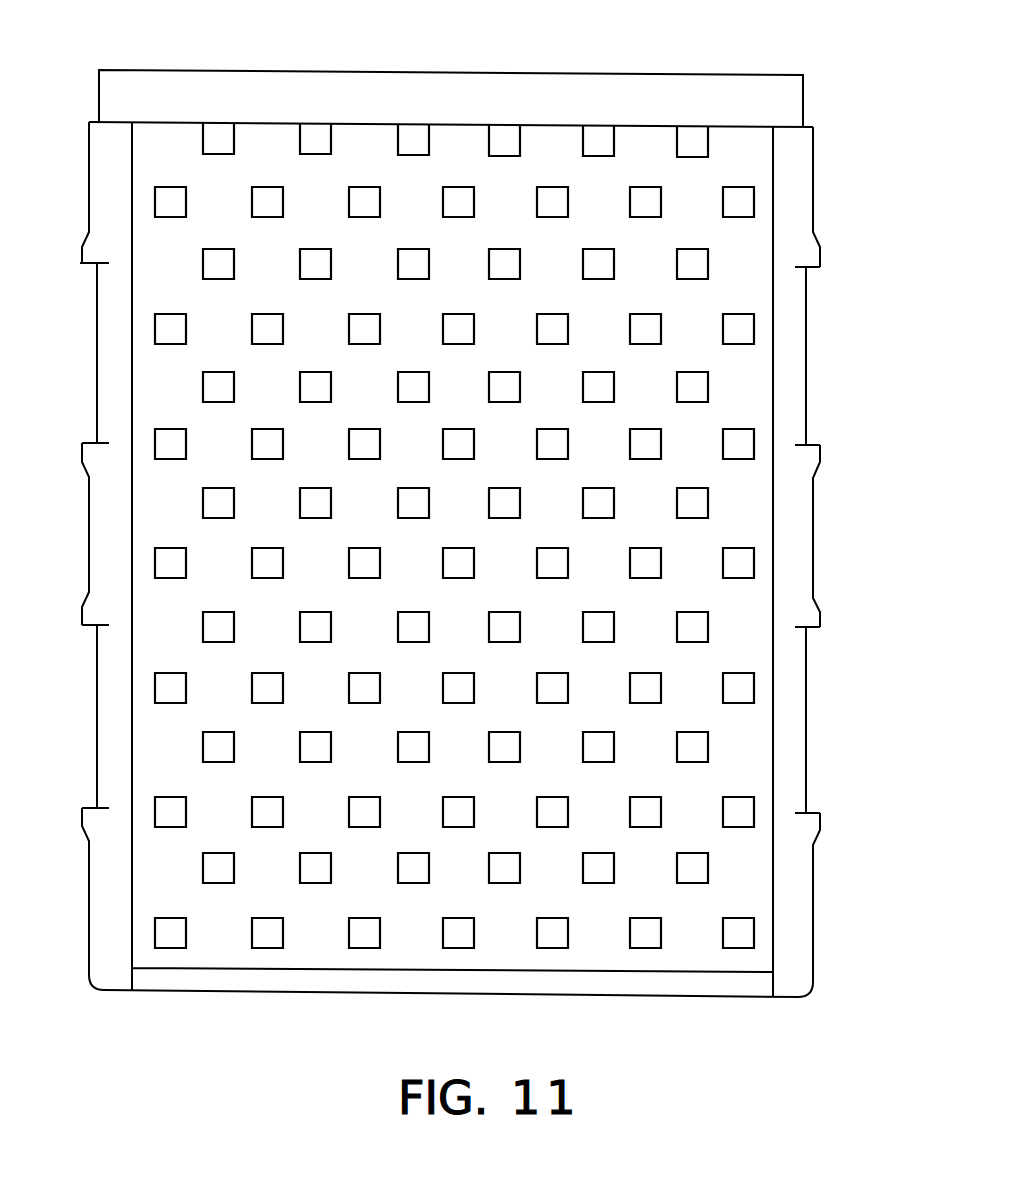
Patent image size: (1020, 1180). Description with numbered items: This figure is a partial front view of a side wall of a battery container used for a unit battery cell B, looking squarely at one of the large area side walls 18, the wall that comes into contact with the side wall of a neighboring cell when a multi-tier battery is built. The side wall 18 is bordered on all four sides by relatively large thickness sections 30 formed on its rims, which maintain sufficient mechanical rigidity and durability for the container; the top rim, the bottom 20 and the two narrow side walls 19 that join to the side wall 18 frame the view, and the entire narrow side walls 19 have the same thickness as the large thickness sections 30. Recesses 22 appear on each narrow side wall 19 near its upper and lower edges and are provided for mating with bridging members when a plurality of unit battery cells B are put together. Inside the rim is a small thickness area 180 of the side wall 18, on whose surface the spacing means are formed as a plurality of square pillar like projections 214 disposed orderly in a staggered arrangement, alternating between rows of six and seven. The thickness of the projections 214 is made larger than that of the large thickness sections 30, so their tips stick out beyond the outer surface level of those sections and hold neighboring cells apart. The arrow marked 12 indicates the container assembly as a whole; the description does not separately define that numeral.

The tray assembly 12 is at (204, 66).
The side wall 18 is at (288, 103).
The small thickness area 180 is at (645, 145).
The large thickness section 30 is at (787, 95).
The recess 22 is at (806, 337).
The square pillar like projection 214 is at (693, 388).
The narrow side wall 19 is at (813, 525).
The bottom 20 is at (340, 996).
The unit battery cell B is at (97, 343).